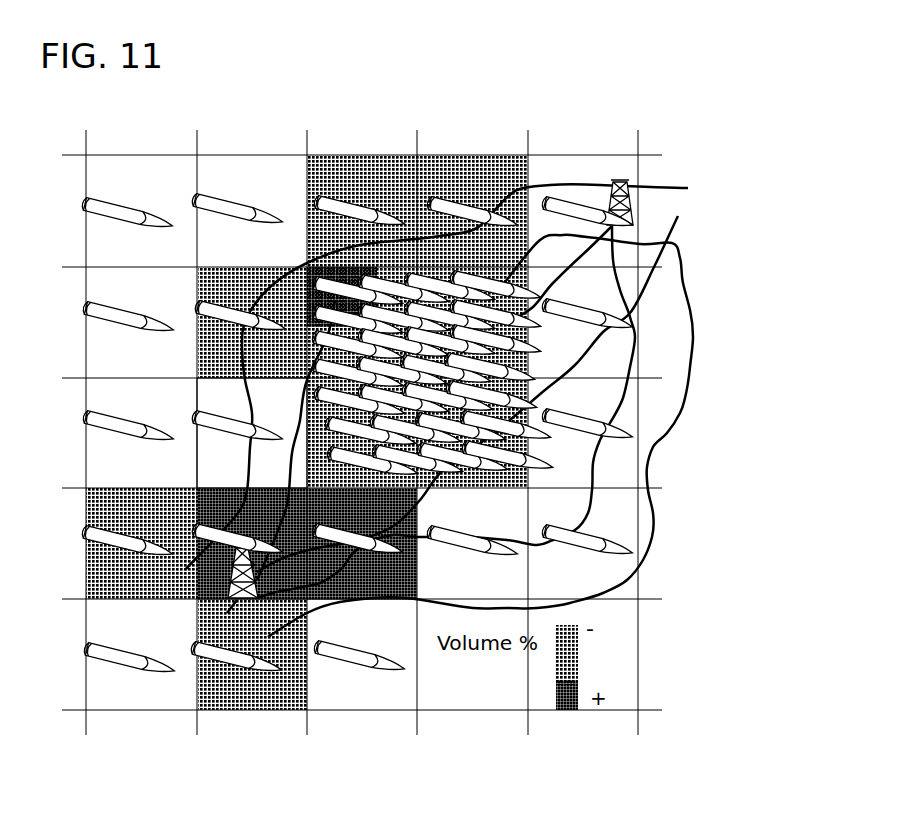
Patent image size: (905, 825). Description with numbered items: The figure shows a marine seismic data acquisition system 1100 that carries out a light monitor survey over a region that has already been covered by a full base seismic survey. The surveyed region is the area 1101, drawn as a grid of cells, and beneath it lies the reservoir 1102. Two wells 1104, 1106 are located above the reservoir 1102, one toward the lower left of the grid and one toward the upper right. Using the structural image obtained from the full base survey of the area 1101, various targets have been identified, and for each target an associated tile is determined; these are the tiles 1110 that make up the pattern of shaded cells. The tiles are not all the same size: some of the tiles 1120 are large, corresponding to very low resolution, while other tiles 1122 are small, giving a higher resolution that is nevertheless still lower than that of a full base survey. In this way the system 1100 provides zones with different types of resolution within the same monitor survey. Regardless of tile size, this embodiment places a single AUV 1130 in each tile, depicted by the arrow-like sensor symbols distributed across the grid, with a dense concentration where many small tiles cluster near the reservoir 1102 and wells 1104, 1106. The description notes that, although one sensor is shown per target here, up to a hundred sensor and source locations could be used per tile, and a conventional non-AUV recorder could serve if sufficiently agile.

The marine seismic data acquisition system 1100 is at (587, 128).
The area 1101 is at (125, 155).
The reservoir 1102 is at (203, 388).
The well 1104 is at (203, 580).
The well 1106 is at (632, 204).
The tiles 1110 is at (420, 673).
The large tiles 1120 is at (224, 163).
The small tiles 1122 is at (307, 471).
The AUV 1130 is at (242, 203).